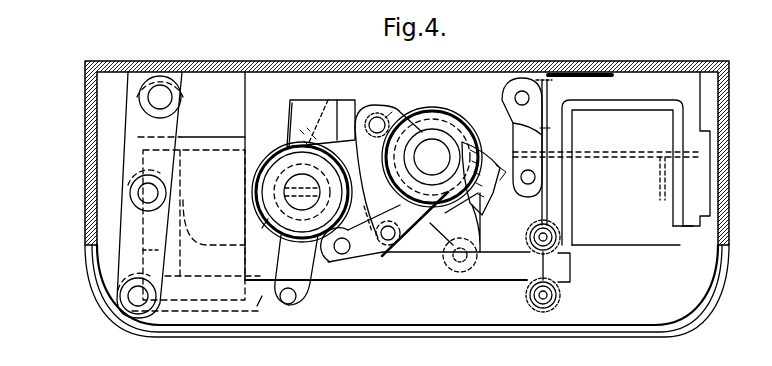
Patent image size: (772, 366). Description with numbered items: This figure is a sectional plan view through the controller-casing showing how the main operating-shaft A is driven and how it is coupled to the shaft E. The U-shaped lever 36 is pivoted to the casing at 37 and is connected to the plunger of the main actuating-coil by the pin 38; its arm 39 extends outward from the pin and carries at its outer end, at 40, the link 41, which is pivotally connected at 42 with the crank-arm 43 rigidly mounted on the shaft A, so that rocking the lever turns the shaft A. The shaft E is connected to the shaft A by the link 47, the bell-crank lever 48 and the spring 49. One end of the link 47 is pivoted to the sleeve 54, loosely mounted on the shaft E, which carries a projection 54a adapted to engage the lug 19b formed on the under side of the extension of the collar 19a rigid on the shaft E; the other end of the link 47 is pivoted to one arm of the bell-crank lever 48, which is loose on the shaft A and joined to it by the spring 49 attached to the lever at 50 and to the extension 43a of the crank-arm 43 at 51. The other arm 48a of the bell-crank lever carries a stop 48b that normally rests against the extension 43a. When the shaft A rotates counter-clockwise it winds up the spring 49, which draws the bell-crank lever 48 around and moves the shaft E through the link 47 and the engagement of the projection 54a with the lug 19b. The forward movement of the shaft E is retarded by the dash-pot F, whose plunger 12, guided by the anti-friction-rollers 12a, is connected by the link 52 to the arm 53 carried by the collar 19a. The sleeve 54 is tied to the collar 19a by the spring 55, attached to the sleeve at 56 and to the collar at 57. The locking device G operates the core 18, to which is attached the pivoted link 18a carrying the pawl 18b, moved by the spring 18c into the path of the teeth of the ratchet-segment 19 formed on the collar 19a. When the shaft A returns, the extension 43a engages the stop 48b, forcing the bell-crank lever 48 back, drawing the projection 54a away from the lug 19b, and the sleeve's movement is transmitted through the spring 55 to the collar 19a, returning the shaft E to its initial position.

The plunger 12 is at (170, 260).
The anti-friction-rollers 12a is at (530, 256).
The core 18 is at (542, 202).
The pivoted link 18a is at (563, 92).
The pawl or locking member 18b is at (542, 80).
The spring 18c is at (545, 128).
The ratchet-segment 19 is at (478, 243).
The collar 19a is at (470, 108).
The lug 19b is at (515, 190).
The U-shaped lever 36 is at (150, 163).
The pivot 37 is at (160, 95).
The pin 38 is at (140, 193).
The arm 39 is at (150, 250).
The pivot 40 is at (120, 317).
The link 41 is at (257, 306).
The pivot 42 is at (290, 303).
The crank-arm 43 is at (302, 265).
The extension 43a is at (300, 108).
The link 47 is at (470, 227).
The bell-crank lever 48 is at (364, 206).
The arm 48a is at (371, 118).
The stop 48b is at (349, 112).
The spring 49 is at (259, 230).
The attachment point 50 is at (388, 171).
The attachment point 51 is at (309, 125).
The link 52 is at (357, 253).
The arm 53 is at (424, 265).
The sleeve 54 is at (510, 152).
The projection 54a is at (468, 142).
The spring 55 is at (419, 129).
The attachment point 56 is at (414, 132).
The attachment point 57 is at (390, 124).
The main operating-shaft A is at (298, 181).
The shaft E is at (433, 156).
The dash-pot F is at (207, 213).
The locking device G is at (627, 230).